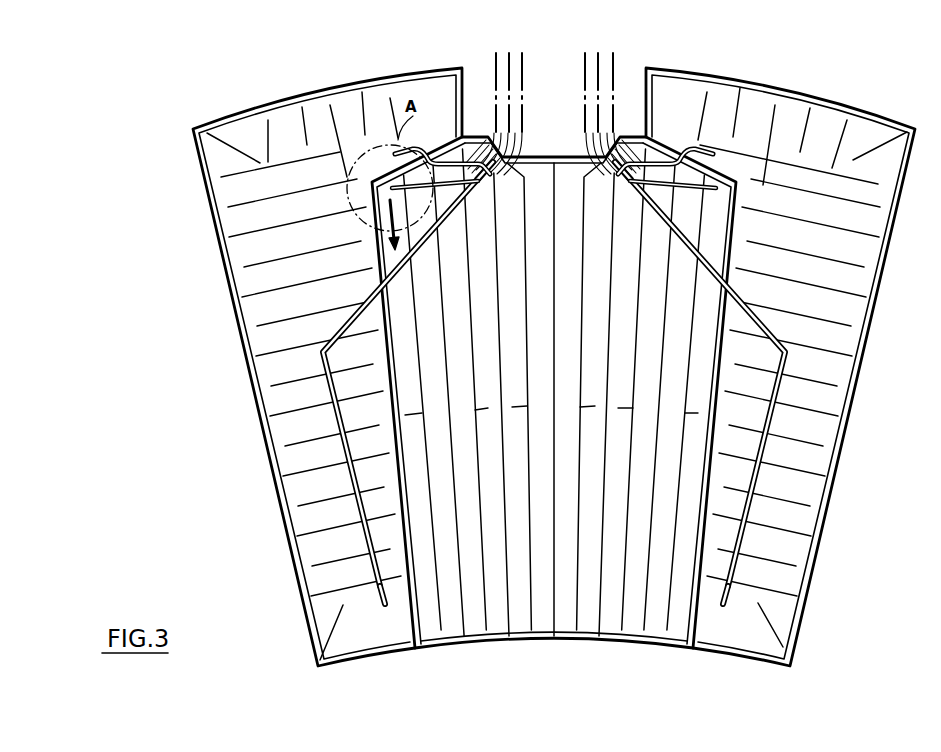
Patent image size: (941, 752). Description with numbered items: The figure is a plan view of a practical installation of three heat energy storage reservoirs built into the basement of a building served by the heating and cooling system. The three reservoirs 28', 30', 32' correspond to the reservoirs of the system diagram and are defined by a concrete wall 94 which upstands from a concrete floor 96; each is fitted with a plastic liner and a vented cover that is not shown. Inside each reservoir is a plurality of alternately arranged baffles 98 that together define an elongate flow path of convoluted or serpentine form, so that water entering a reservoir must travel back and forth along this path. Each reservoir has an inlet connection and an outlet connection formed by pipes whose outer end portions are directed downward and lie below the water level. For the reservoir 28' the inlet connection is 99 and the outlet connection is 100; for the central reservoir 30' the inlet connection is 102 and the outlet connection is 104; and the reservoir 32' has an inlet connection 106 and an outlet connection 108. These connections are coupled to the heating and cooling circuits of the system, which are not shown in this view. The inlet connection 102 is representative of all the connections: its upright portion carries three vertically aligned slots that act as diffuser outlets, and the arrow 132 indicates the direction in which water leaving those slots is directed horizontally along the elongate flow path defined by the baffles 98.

The reservoir 28' is at (329, 353).
The reservoir 32' is at (779, 352).
The reservoir 30' is at (554, 117).
The concrete wall 94 is at (829, 104).
The concrete floor 96 is at (372, 96).
The baffles 98 is at (282, 446).
The inlet connection 99 is at (380, 570).
The outlet connection 100 is at (421, 148).
The inlet connection 102 is at (441, 215).
The outlet connection 104 is at (733, 198).
The inlet connection 106 is at (713, 597).
The outlet connection 108 is at (697, 150).
The arrow 132 is at (410, 243).